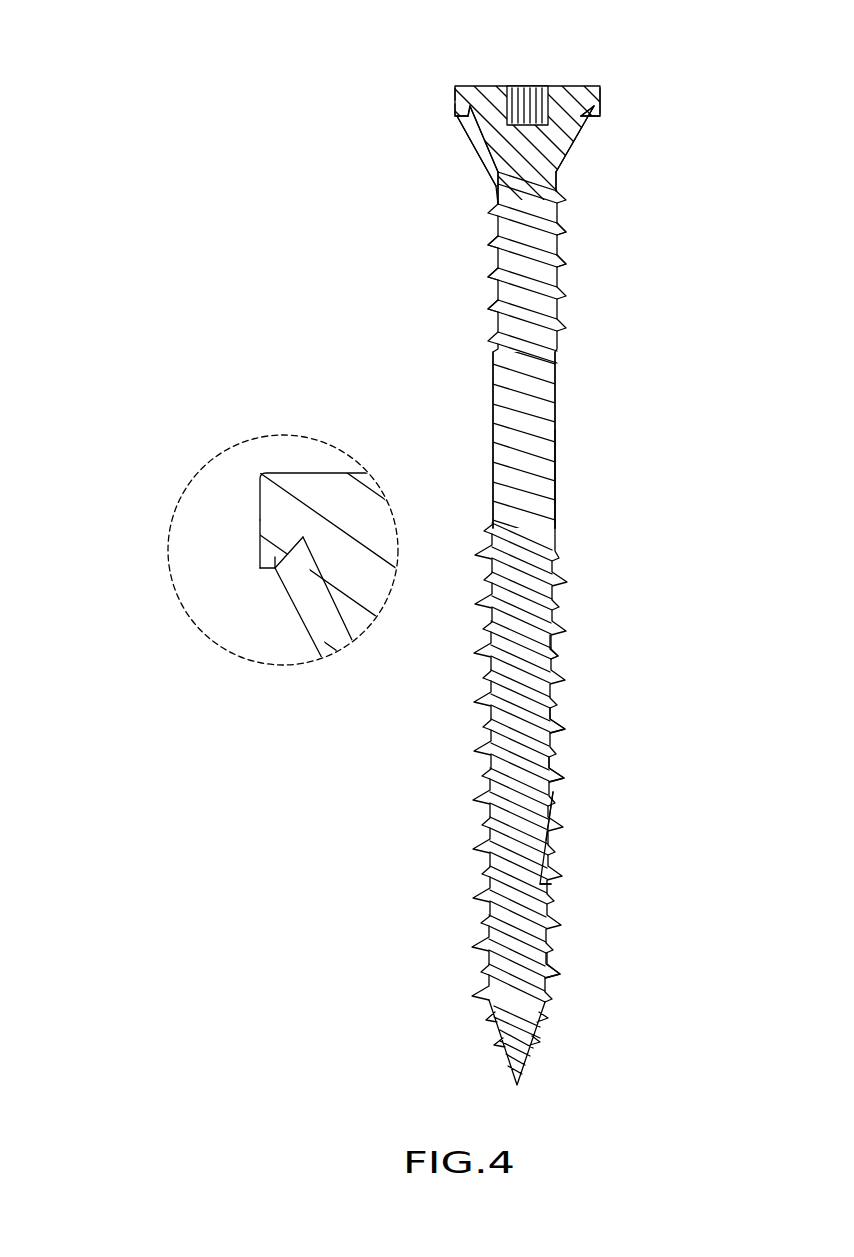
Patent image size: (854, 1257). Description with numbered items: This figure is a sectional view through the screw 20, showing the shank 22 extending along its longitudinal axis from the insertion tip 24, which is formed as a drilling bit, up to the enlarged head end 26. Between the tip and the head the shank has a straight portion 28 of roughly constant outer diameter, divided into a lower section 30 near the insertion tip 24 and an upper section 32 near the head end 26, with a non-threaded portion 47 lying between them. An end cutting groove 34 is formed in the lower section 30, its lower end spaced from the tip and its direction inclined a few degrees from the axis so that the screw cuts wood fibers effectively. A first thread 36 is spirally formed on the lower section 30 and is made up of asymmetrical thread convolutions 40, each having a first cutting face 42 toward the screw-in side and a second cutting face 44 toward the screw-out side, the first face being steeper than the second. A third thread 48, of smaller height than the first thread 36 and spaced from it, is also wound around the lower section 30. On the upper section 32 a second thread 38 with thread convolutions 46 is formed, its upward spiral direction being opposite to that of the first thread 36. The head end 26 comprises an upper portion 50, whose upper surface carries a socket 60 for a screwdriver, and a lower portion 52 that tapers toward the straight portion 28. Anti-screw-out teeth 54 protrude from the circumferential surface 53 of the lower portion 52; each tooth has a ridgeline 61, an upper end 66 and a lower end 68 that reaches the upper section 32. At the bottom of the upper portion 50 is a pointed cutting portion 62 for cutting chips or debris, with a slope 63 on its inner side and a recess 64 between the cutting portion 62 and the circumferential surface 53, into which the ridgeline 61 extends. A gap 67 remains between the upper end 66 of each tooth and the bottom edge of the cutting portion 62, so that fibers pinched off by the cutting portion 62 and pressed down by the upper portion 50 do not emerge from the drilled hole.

The screw 20 is at (684, 506).
The shank 22 is at (527, 588).
The insertion tip 24 is at (530, 1058).
The head end 26 is at (488, 92).
The straight portion 28 is at (557, 443).
The lower section 30 is at (522, 960).
The upper section 32 is at (556, 216).
The end cutting groove 34 is at (562, 868).
The first thread 36 is at (563, 818).
The second thread 38 is at (564, 262).
The thread convolution 40 is at (563, 722).
The first cutting face 42 is at (560, 878).
The second cutting face 44 is at (562, 770).
The thread convolution 46 is at (493, 280).
The non-threaded portion 47 is at (556, 396).
The third thread 48 is at (556, 652).
The upper portion 50 is at (457, 88).
The lower portion 52 is at (483, 152).
The circumferential surface 53 is at (567, 150).
The anti-screw-out tooth 54 is at (474, 128).
The socket 60 is at (540, 86).
The ridgeline 61 is at (487, 164).
The cutting portion 62 is at (602, 117).
The slope 63 is at (601, 98).
The recess 64 is at (588, 114).
The upper end 66 is at (461, 104).
The gap 67 is at (468, 118).
The lower end 68 is at (494, 182).